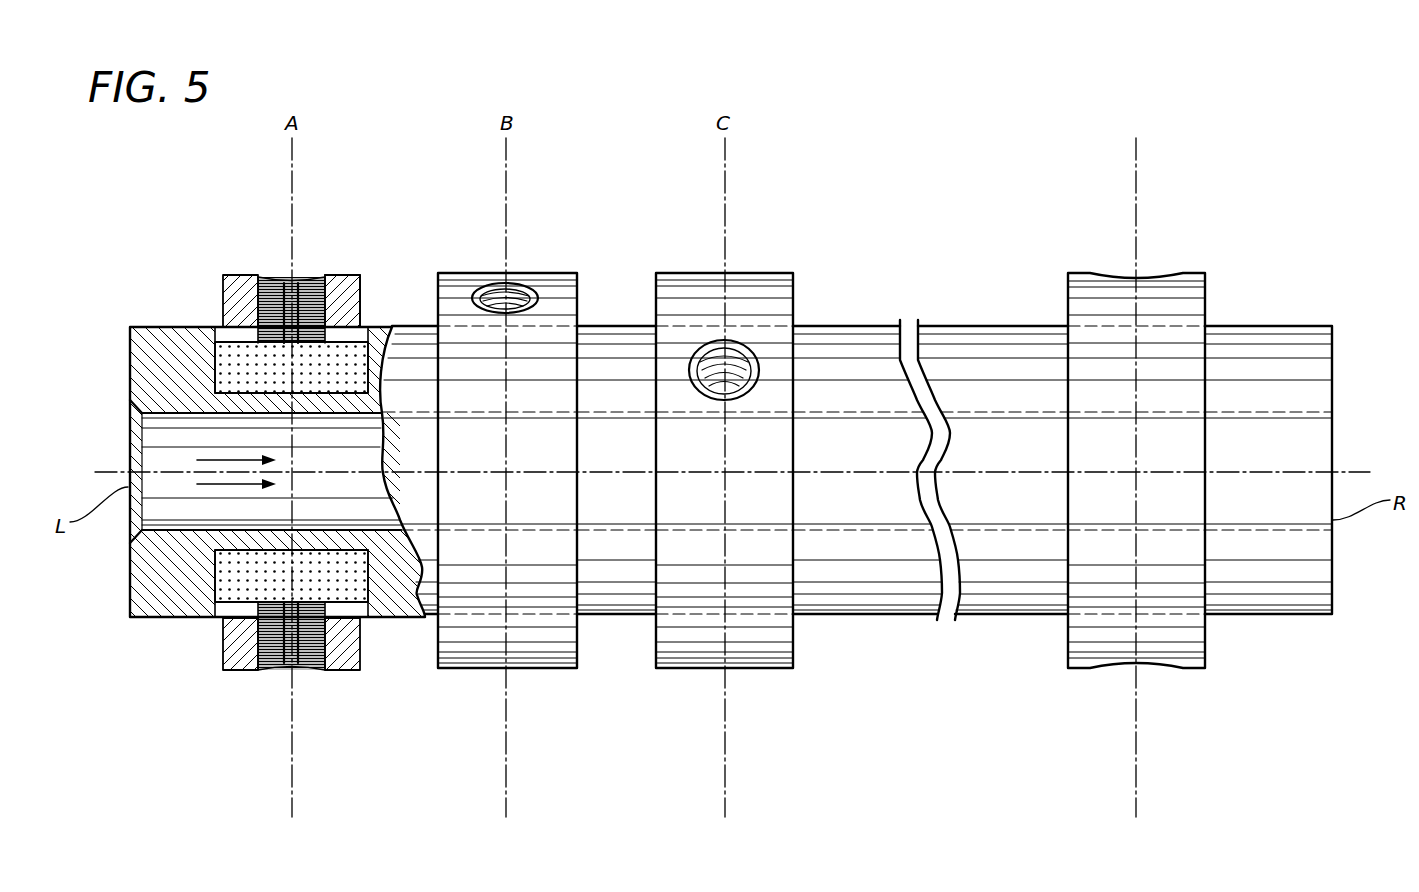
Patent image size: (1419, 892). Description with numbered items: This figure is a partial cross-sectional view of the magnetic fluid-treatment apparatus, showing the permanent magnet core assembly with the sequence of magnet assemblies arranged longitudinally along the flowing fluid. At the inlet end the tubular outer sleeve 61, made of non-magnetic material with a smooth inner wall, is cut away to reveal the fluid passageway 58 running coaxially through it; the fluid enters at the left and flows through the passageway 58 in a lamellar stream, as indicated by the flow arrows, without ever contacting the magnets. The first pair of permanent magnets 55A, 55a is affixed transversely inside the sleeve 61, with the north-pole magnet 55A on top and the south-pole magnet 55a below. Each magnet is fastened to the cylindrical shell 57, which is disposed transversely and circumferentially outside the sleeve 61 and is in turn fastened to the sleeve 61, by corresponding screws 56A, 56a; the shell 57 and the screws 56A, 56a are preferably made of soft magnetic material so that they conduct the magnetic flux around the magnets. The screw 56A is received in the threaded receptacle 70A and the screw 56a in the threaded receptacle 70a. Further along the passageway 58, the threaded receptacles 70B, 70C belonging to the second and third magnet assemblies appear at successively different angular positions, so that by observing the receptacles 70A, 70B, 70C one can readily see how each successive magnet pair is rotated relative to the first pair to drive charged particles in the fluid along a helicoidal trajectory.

The sleeve 61 is at (167, 348).
The fluid passageway 58 is at (221, 476).
The permanent magnet 55A is at (228, 365).
The permanent magnet 55a is at (228, 592).
The screw 56A is at (320, 280).
The screw 56a is at (362, 660).
The shell 57 is at (363, 290).
The threaded receptacle 70A is at (280, 278).
The threaded receptacle 70a is at (282, 666).
The threaded receptacle 70B is at (521, 285).
The threaded receptacle 70C is at (750, 360).